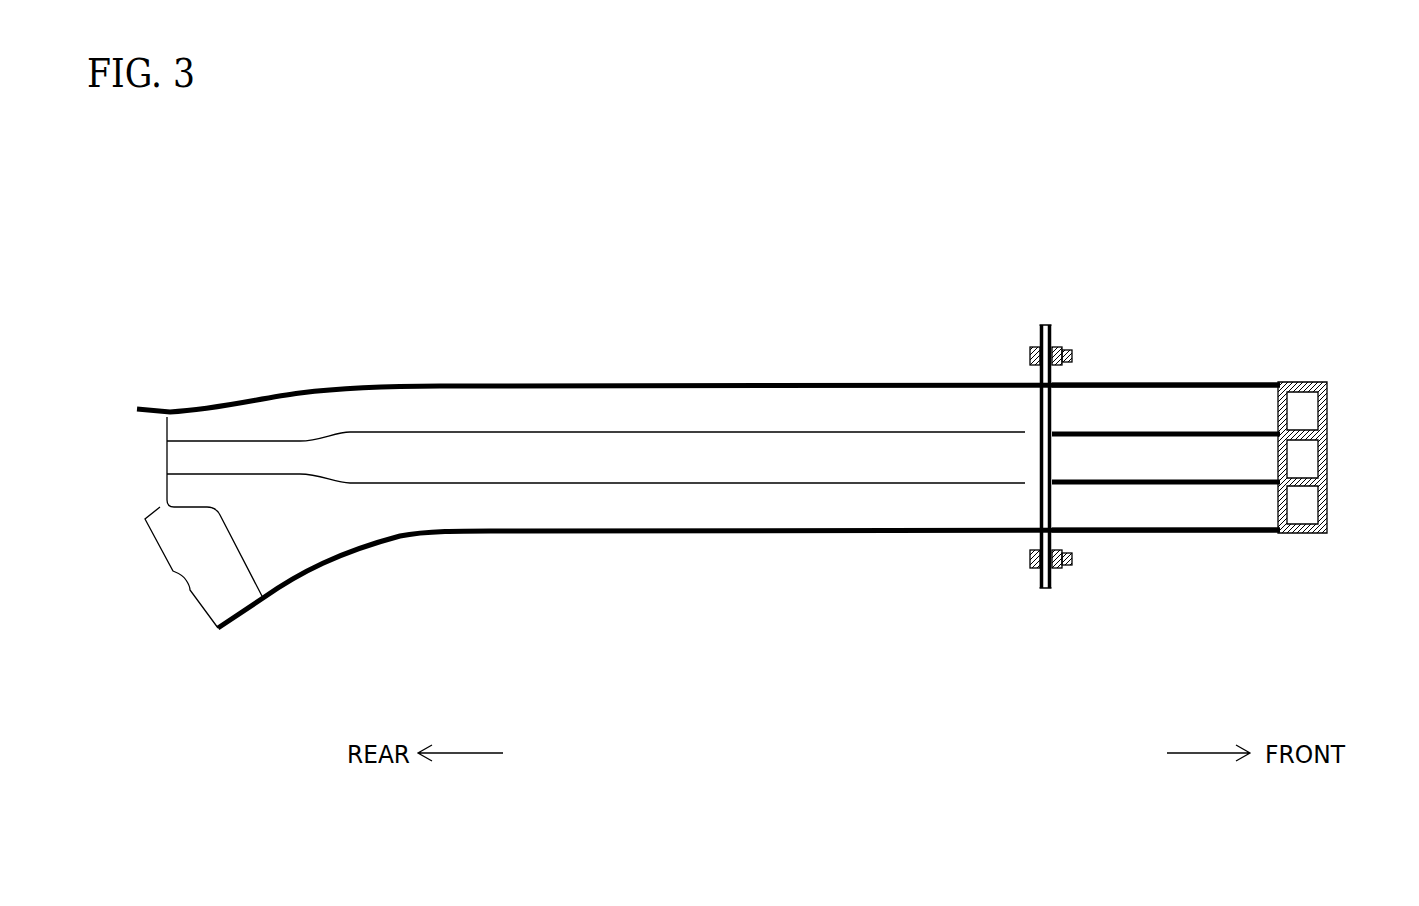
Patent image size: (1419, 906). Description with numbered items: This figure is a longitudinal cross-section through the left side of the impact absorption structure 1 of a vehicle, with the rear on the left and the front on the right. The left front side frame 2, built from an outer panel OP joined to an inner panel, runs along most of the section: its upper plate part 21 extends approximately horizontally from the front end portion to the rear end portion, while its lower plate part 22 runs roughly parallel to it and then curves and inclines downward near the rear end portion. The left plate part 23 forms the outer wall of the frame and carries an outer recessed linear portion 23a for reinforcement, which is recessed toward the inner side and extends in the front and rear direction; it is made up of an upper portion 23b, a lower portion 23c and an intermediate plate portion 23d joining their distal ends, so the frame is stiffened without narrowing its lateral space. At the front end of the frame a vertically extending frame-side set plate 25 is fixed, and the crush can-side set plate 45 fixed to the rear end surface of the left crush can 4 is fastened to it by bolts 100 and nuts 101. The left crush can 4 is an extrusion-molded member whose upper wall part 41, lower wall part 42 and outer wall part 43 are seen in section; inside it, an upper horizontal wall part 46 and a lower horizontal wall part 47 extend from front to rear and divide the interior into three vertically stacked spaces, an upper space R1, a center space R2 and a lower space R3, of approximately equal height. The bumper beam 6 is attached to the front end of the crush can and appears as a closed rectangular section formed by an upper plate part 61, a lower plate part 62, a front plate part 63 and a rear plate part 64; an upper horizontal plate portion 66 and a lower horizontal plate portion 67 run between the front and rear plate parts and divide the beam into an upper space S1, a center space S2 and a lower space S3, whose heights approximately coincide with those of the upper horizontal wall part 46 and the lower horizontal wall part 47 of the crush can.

The impact absorption structure 1 is at (941, 297).
The left front side frame 2 is at (465, 369).
The outer panel OP is at (368, 385).
The upper plate part 21 is at (572, 383).
The lower plate part 22 is at (565, 534).
The left plate part 23 is at (672, 410).
The outer recessed linear portion 23a is at (913, 312).
The upper portion 23b is at (738, 432).
The lower portion 23c is at (872, 482).
The intermediate plate portion 23d is at (805, 458).
The frame-side set plate 25 is at (1040, 330).
The crush can-side set plate 45 is at (1050, 335).
The bolt 100 is at (1033, 345).
The nut 101 is at (1060, 345).
The left crush can 4 is at (1185, 368).
The upper wall part 41 is at (1202, 383).
The lower wall part 42 is at (1162, 535).
The outer wall part 43 is at (1127, 460).
The upper horizontal wall part 46 is at (1247, 430).
The lower horizontal wall part 47 is at (1190, 486).
The upper space R1 is at (1223, 405).
The center space R2 is at (1267, 455).
The lower space R3 is at (1113, 507).
The bumper beam 6 is at (1342, 392).
The upper plate part 61 is at (1302, 382).
The lower plate part 62 is at (1307, 533).
The front plate part 63 is at (1310, 465).
The rear plate part 64 is at (1272, 470).
The upper horizontal plate portion 66 is at (1308, 425).
The lower horizontal plate portion 67 is at (1305, 512).
The upper space S1 is at (1312, 410).
The center space S2 is at (1307, 490).
The lower space S3 is at (1327, 515).